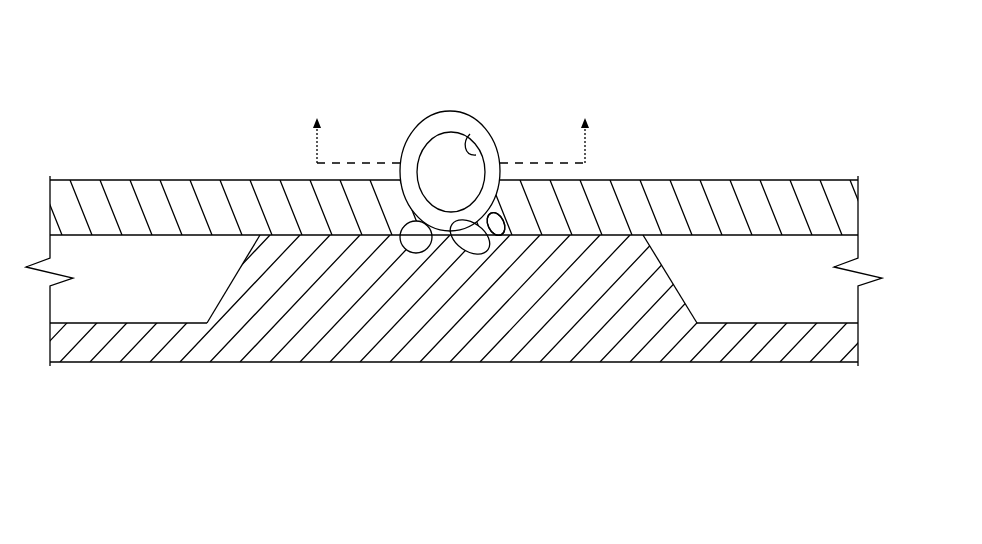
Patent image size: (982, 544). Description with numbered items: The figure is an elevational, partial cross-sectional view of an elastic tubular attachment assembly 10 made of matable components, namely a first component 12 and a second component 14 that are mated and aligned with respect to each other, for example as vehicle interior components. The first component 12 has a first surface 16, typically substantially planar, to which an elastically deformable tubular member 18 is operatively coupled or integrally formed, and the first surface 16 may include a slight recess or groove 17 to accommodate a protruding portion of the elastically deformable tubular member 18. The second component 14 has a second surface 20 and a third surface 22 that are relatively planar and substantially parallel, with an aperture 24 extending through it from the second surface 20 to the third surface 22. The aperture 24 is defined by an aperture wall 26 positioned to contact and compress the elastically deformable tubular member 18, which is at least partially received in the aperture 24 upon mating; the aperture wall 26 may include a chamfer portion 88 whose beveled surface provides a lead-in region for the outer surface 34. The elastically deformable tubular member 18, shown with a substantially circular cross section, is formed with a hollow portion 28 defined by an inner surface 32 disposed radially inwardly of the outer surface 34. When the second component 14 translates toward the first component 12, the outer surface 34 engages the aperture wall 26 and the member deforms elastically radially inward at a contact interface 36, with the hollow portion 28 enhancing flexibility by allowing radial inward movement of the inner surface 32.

The elastic tubular attachment assembly 10 is at (724, 75).
The first component 12 is at (134, 372).
The second component 14 is at (725, 162).
The first surface 16 is at (293, 235).
The recess or groove 17 is at (496, 236).
The elastically deformable tubular member 18 is at (428, 100).
The second surface 20 is at (128, 236).
The third surface 22 is at (133, 200).
The aperture 24 is at (412, 232).
The aperture wall 26 is at (502, 234).
The chamfer portion 88 is at (502, 234).
The hollow portion 28 is at (443, 150).
The inner surface 32 is at (470, 134).
The outer surface 34 is at (413, 135).
The contact interface 36 is at (443, 243).